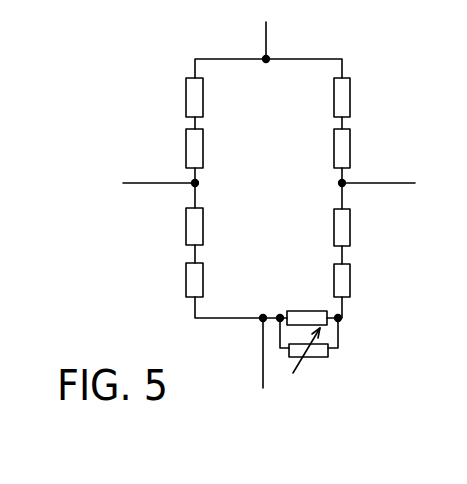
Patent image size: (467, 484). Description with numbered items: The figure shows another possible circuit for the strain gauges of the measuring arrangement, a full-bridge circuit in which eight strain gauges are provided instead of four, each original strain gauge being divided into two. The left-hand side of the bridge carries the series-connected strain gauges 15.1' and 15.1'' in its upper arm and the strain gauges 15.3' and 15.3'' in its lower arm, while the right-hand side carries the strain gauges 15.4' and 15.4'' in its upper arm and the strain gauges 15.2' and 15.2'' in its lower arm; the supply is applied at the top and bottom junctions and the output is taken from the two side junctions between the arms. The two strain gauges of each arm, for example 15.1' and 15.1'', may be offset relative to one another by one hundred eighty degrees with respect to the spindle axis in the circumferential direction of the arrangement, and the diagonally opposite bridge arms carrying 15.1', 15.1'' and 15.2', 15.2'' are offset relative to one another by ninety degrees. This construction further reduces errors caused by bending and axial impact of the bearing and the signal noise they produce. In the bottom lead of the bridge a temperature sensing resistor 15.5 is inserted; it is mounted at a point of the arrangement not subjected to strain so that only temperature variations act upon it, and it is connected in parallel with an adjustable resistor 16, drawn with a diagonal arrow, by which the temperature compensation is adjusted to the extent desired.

The strain gauge 15.1' is at (154, 97).
The strain gauge 15.1'' is at (150, 145).
The strain gauge 15.3' is at (150, 226).
The strain gauge 15.3'' is at (152, 280).
The strain gauge 15.4' is at (376, 89).
The strain gauge 15.4'' is at (379, 140).
The strain gauge 15.2' is at (378, 222).
The strain gauge 15.2'' is at (381, 274).
The temperature sensing resistor 15.5 is at (318, 313).
The adjustable resistor 16 is at (322, 355).